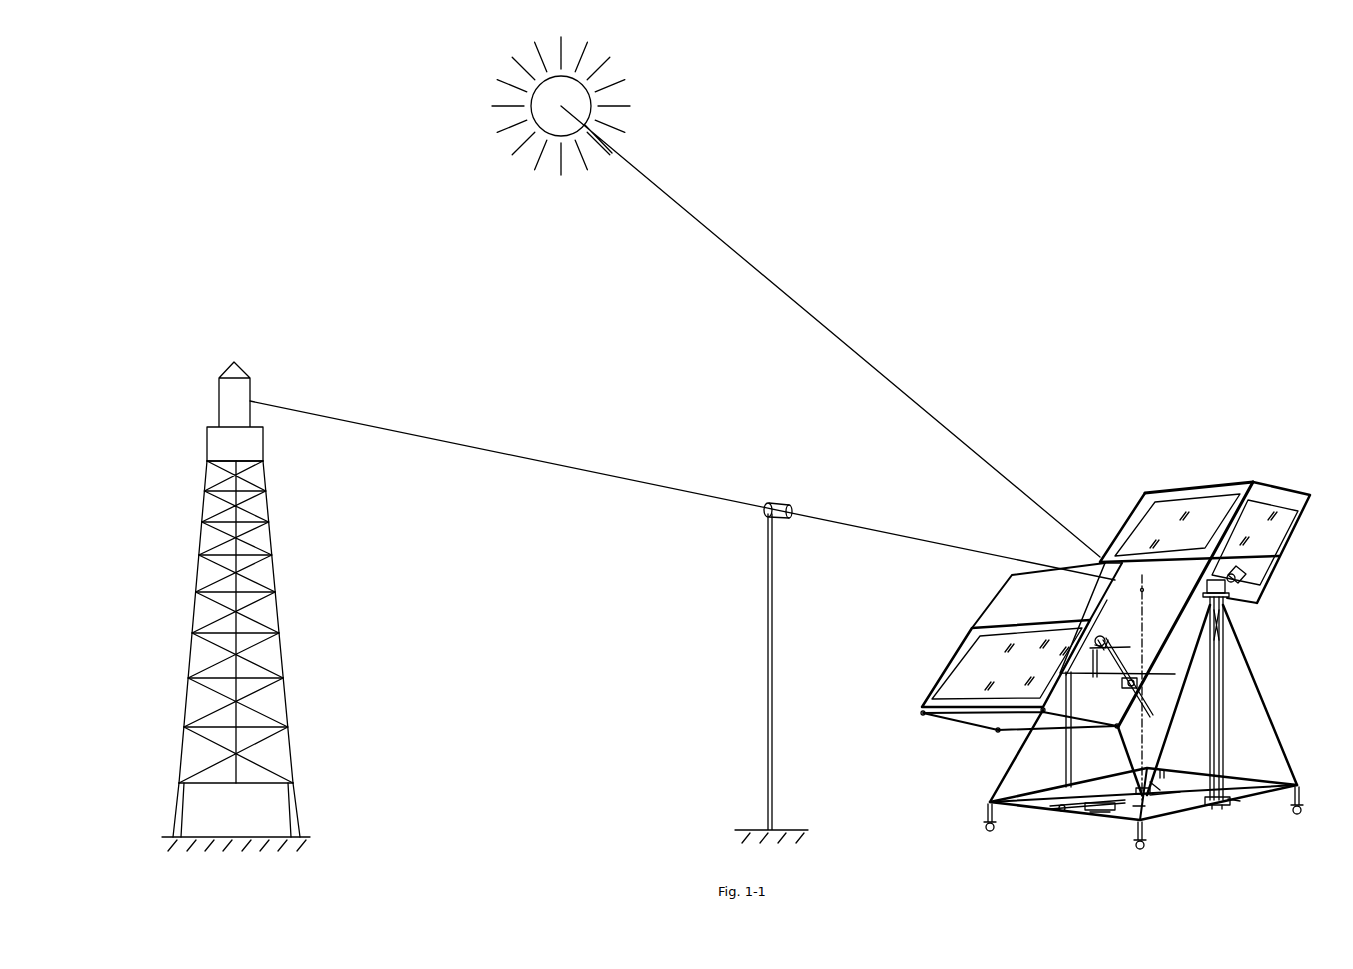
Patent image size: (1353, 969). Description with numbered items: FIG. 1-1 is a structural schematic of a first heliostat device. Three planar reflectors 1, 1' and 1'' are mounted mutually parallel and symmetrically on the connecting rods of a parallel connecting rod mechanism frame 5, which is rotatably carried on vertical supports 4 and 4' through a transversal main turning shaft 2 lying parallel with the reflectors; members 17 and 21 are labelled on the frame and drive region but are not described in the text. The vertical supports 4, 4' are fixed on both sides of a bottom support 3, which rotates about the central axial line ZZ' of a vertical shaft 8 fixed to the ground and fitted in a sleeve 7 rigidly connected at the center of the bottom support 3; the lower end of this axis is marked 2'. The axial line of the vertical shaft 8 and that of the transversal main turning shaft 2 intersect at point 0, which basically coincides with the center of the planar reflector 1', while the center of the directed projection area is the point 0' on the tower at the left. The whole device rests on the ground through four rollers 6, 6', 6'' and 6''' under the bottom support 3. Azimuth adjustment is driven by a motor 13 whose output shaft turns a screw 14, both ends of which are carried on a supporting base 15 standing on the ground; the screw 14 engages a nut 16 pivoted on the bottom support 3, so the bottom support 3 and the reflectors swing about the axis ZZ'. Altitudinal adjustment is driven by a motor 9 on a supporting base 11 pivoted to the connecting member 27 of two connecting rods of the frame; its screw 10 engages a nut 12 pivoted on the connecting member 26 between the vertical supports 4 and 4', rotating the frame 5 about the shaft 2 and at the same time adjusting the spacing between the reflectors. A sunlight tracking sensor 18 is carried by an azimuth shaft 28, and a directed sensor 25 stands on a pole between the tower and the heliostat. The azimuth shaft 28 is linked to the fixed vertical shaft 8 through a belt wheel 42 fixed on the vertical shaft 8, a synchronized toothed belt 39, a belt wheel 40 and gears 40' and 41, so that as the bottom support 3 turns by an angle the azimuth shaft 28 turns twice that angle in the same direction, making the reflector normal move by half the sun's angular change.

The point O' on the tower 0' is at (682, 478).
The directed sensor 25 is at (786, 506).
The parallel connecting rod mechanism frame 5 is at (1218, 489).
The transversal main turning shaft 2 is at (1185, 604).
The rear left solar panel 17 is at (1196, 553).
The planar reflector 1'' is at (1261, 542).
The sunlight tracking sensor 18 is at (1236, 577).
The vertical support 4' is at (1226, 698).
The azimuth shaft 28 is at (1227, 652).
The connecting member 26 is at (1160, 670).
The central axial line ZZ' 2' is at (1148, 687).
The intersection point O 0 is at (1142, 589).
The planar reflector 1 is at (1000, 663).
The planar reflector 1' is at (1126, 618).
The vertical support 4 is at (1086, 693).
The motor 9 is at (1096, 642).
The screw 10 is at (1113, 665).
The link bar 21 is at (1117, 636).
The supporting base 11 is at (1103, 663).
The connecting member 27 is at (1124, 635).
The nut 12 is at (1139, 668).
The bottom support 3 is at (1172, 814).
The roller 6 is at (983, 823).
The roller 6' is at (1148, 840).
The roller 6'' is at (1307, 800).
The roller 6''' is at (1177, 763).
The motor 13 is at (1052, 814).
The supporting base 15 is at (1062, 812).
The nut 16 is at (1092, 812).
The screw 14 is at (1115, 815).
The sleeve 7 is at (1137, 810).
The vertical shaft 8 is at (1137, 789).
The belt wheel 42 is at (1158, 786).
The synchronized toothed belt 39 is at (1180, 793).
The belt wheel 40 is at (1217, 814).
The gear 41 is at (1232, 805).
The gear 40' is at (1229, 825).